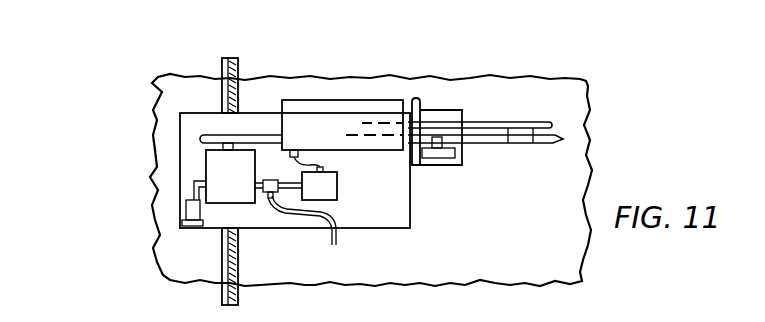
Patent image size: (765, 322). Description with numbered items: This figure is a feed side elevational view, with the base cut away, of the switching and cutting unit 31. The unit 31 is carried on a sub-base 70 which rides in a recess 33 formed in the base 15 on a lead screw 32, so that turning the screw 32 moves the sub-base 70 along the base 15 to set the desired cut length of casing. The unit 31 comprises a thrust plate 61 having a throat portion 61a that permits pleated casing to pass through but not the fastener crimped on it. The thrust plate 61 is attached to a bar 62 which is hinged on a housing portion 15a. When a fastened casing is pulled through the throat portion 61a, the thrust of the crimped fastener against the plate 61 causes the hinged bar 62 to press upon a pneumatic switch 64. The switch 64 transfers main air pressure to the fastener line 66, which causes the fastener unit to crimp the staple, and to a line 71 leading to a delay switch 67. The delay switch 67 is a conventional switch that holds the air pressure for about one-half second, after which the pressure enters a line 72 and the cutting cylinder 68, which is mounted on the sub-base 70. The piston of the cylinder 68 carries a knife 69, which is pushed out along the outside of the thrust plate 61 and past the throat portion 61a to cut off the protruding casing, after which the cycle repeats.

The base 15 is at (308, 285).
The housing portion 15a is at (434, 166).
The switching and cutting unit 31 is at (442, 60).
The lead screw 32 is at (220, 100).
The recess 33 is at (228, 86).
The thrust plate 61 is at (563, 138).
The throat portion 61a is at (526, 123).
The bar 62 is at (265, 134).
The pneumatic switch 64 is at (230, 150).
The fastener line 66 is at (288, 228).
The delay switch 67 is at (338, 188).
The cutting cylinder 68 is at (365, 112).
The knife 69 is at (522, 136).
The sub-base 70 is at (366, 227).
The line 71 is at (283, 174).
The line 72 is at (322, 162).